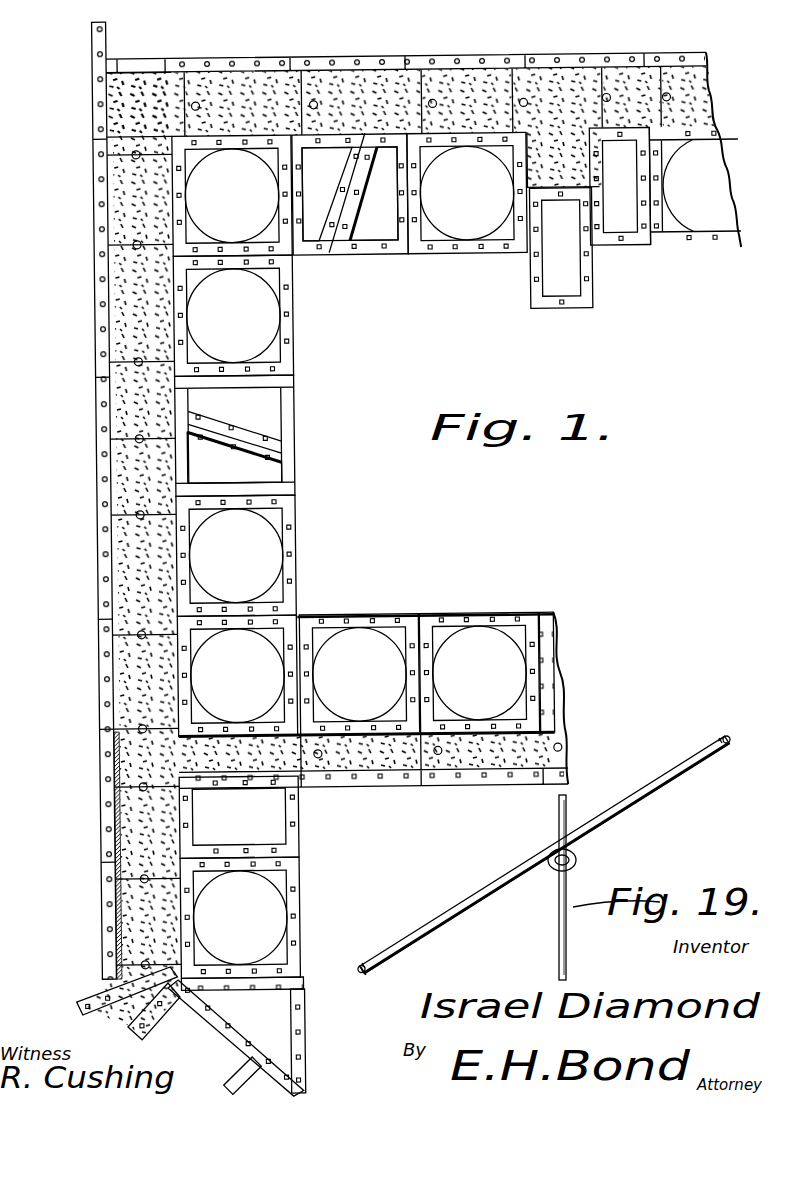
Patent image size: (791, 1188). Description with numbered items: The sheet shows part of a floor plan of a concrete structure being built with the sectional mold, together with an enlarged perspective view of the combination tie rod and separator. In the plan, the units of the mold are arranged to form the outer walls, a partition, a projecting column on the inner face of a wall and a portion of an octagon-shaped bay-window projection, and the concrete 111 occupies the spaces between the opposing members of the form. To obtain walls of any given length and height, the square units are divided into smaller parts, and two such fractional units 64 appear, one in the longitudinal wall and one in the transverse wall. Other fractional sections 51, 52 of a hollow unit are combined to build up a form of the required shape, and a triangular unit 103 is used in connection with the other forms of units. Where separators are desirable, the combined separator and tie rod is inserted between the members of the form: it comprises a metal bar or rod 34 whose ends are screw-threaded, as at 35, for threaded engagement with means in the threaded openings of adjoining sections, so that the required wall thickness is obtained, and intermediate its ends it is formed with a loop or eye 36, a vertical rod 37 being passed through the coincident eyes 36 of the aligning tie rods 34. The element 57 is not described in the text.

In FIG. 1, the concrete 111 is at (515, 757).
In FIG. 1, the tie rod 34 is at (430, 758).
In FIG. 19, the tie rod 34 is at (647, 788).
In FIG. 19, the screw-threaded ends 35 is at (365, 960).
In FIG. 19, the loop or eye 36 is at (575, 863).
In FIG. 19, the vertical rod 37 is at (558, 937).
In FIG. 1, the fractional section 51 is at (318, 218).
In FIG. 1, the fractional section 52 is at (388, 223).
In FIG. 1, the diagonal strip 57 is at (256, 407).
In FIG. 1, the fractional unit 64 is at (627, 214).
In FIG. 1, the triangular unit 103 is at (262, 1017).